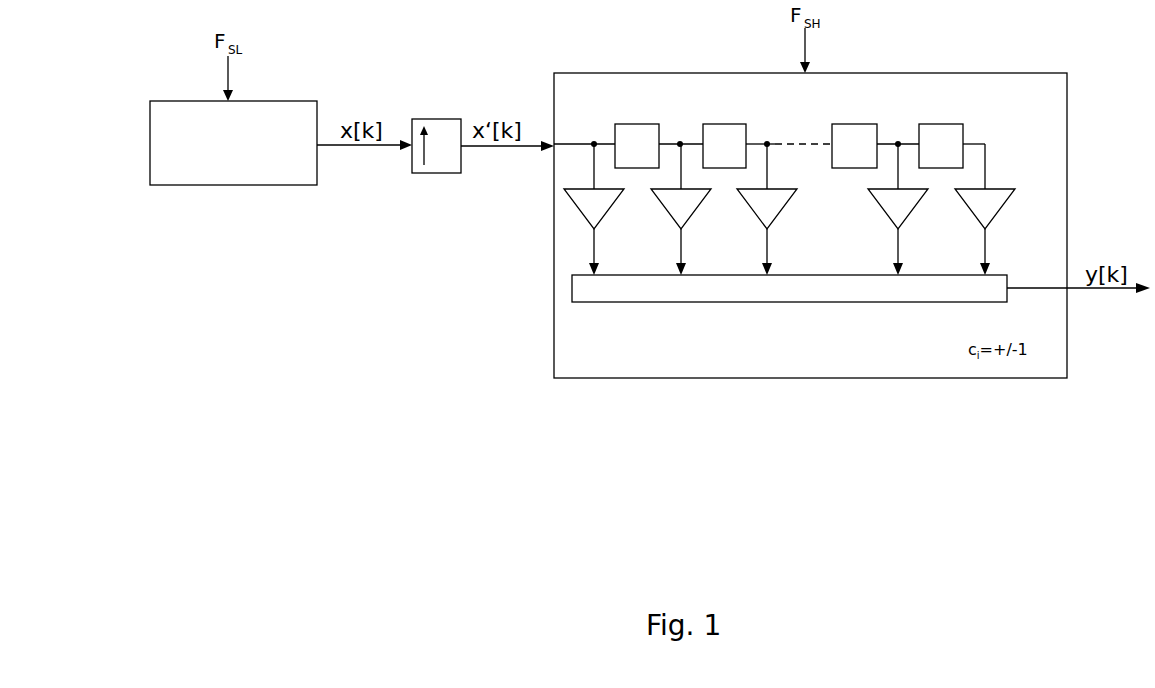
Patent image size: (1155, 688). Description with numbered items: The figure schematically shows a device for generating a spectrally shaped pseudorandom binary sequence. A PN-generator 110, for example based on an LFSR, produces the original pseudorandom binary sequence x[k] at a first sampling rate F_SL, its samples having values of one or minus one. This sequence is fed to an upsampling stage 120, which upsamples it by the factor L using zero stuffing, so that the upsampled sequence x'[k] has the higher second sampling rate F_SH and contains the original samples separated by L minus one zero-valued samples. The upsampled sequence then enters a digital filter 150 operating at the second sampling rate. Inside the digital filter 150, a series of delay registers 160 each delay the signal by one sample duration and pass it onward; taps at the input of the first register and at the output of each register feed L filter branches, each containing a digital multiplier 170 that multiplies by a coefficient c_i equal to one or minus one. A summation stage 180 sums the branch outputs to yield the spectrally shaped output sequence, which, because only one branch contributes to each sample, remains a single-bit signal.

The PN-generator 110 is at (288, 101).
The upsampling stage 120 is at (445, 119).
The digital filter 150 is at (968, 73).
The delay register 160 is at (769, 138).
The digital multiplier 170 is at (808, 209).
The summation stage 180 is at (893, 302).